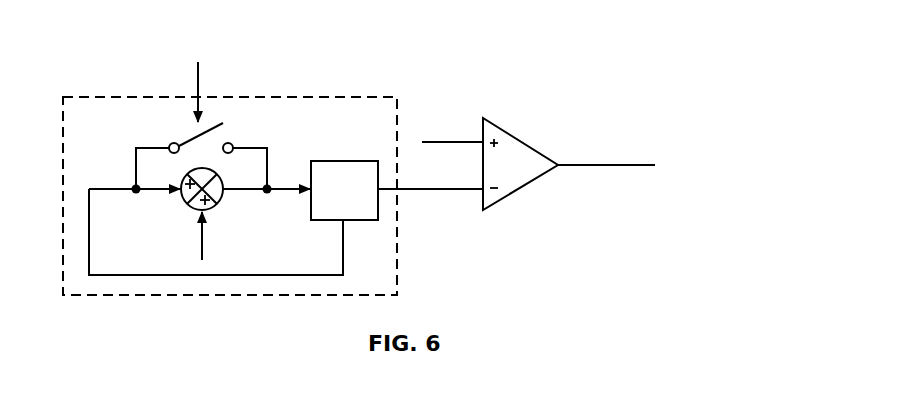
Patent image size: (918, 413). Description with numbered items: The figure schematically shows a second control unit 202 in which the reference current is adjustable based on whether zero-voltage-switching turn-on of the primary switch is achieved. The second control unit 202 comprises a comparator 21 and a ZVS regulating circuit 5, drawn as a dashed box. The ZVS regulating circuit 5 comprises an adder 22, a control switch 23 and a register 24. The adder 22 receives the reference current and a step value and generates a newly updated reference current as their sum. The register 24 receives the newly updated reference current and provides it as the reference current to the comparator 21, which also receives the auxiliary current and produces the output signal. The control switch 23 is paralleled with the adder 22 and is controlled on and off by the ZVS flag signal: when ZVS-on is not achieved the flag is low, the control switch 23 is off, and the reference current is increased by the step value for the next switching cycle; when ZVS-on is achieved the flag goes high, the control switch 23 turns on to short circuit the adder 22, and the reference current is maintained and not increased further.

The ZVS regulating circuit 5 is at (273, 175).
The comparator 21 is at (520, 164).
The adder 22 is at (191, 195).
The control switch 23 is at (201, 153).
The register 24 is at (344, 190).
The second control unit 202 is at (397, 175).